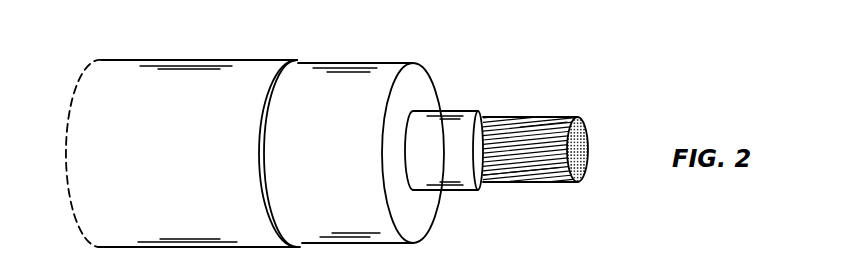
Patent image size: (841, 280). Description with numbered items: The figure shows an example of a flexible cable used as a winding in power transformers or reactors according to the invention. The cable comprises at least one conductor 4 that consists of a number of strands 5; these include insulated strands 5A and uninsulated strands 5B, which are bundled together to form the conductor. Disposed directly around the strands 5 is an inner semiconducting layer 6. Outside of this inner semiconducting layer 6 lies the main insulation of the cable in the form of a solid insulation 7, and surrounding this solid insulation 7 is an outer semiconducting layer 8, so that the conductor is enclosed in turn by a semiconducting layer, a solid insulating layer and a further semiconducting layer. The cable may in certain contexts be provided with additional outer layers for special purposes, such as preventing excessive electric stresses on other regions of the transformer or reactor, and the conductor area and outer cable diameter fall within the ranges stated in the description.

The conductor 4 is at (587, 155).
The strands 5 is at (528, 118).
The insulated strands 5A is at (513, 173).
The uninsulated strands 5B is at (547, 138).
The inner semiconducting layer 6 is at (465, 112).
The solid insulation 7 is at (340, 62).
The outer semiconducting layer 8 is at (192, 62).